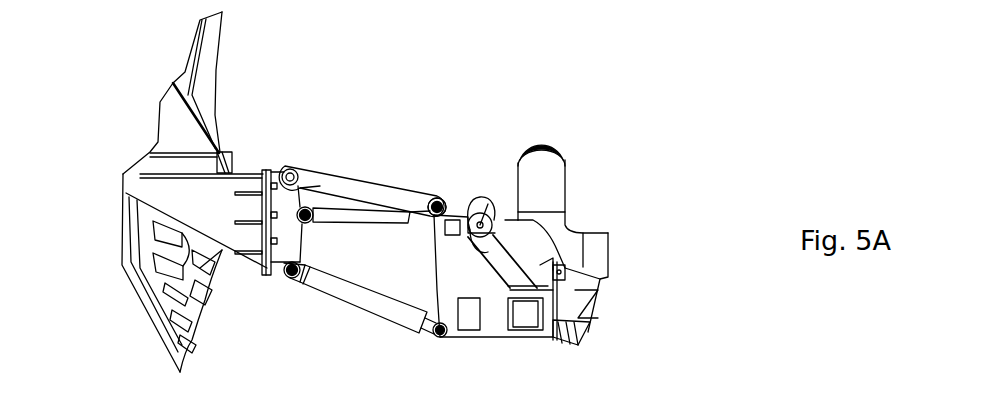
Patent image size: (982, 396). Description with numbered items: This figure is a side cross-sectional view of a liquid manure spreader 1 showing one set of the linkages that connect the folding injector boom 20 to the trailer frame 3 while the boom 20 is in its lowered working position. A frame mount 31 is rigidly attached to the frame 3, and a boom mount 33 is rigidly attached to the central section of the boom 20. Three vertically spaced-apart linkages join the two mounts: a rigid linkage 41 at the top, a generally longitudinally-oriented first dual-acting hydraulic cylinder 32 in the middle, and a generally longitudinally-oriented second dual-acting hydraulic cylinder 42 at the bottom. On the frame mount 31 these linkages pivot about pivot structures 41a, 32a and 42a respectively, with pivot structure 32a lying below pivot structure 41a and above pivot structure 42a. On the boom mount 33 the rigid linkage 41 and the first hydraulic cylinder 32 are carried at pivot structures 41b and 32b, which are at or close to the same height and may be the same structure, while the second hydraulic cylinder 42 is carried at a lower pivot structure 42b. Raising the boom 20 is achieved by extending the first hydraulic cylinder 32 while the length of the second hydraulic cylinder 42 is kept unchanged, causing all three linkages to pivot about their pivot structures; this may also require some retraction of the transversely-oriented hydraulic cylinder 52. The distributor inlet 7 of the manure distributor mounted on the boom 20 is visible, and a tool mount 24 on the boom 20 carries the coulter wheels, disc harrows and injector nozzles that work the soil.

The liquid manure spreader 1 is at (115, 42).
The trailer frame 3 is at (228, 167).
The distributor inlet 7 is at (553, 142).
The folding injector boom 20 is at (614, 302).
The tool mount 24 is at (582, 322).
The frame mount 31 is at (280, 268).
The first dual-acting hydraulic cylinder 32 is at (335, 214).
The pivot structure 32a is at (308, 225).
The pivot structure 32b is at (424, 168).
The boom mount 33 is at (490, 328).
The rigid linkage 41 is at (349, 185).
The pivot structure 41a is at (290, 171).
The pivot structure 41b is at (432, 199).
The second dual-acting hydraulic cylinder 42 is at (358, 303).
The pivot structure 42a is at (292, 279).
The pivot structure 42b is at (440, 338).
The transversely-oriented hydraulic cylinder 52 is at (481, 221).